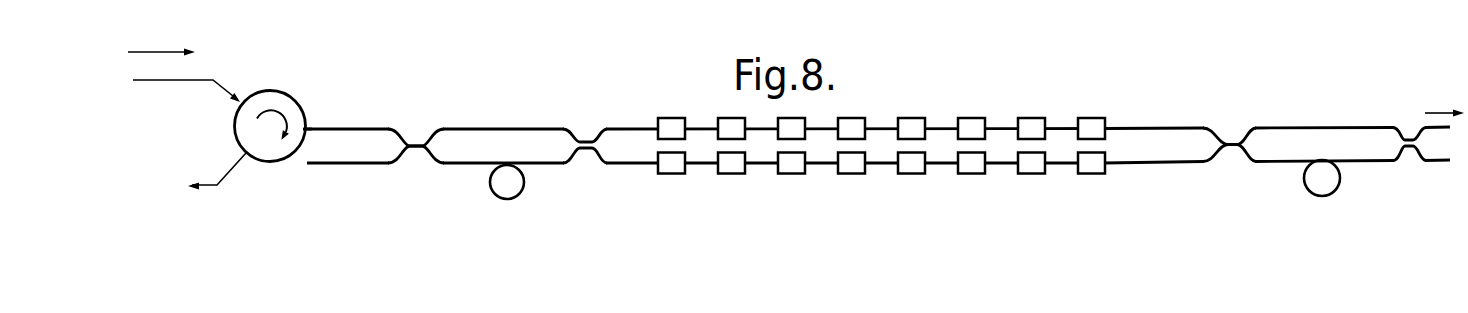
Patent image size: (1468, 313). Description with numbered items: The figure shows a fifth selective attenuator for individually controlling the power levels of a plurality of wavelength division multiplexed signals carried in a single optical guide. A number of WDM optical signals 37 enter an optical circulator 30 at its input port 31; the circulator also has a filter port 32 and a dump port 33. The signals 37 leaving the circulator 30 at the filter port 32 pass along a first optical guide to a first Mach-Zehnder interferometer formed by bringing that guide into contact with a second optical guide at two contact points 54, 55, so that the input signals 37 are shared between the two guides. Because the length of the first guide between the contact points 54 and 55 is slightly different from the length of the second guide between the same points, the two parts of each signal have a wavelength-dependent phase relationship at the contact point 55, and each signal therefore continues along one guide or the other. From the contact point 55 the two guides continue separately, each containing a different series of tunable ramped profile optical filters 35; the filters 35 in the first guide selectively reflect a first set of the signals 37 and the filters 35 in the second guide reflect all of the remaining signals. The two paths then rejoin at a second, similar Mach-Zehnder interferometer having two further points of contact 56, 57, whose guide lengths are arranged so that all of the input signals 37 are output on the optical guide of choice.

The optical circulator 30 is at (302, 107).
The input port 31 is at (240, 105).
The filter port 32 is at (305, 131).
The dump port 33 is at (248, 153).
The tunable ramped profile optical filters 35 is at (852, 166).
The WDM optical signals 37 is at (161, 40).
The contact point 54 is at (415, 157).
The contact point 55 is at (583, 153).
The point of contact 56 is at (1230, 140).
The point of contact 57 is at (1413, 138).